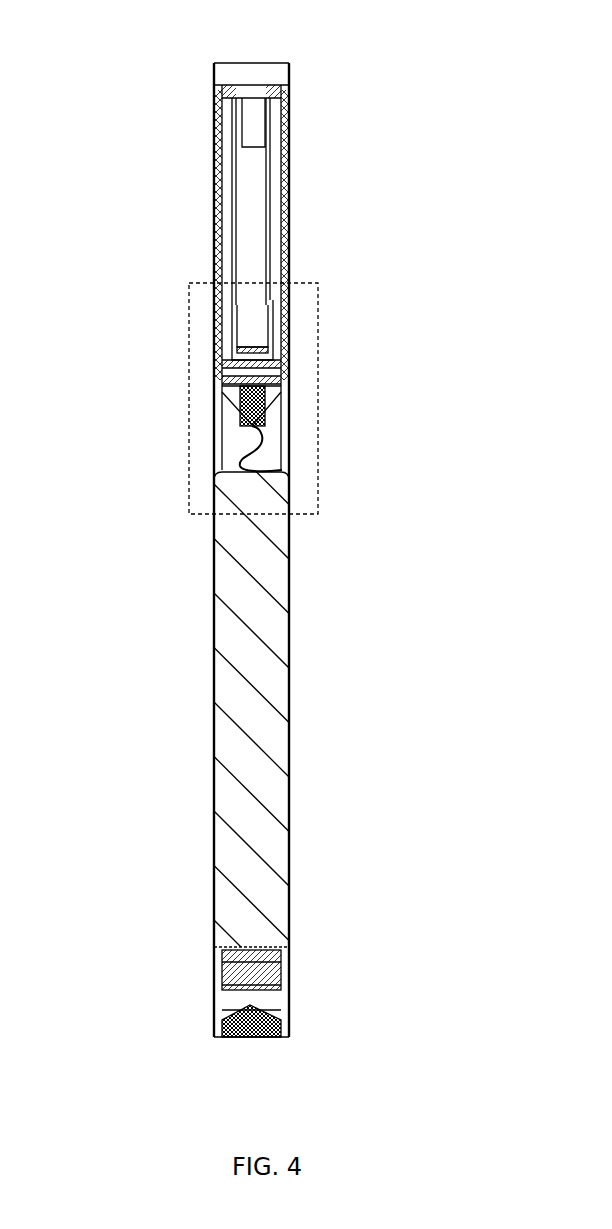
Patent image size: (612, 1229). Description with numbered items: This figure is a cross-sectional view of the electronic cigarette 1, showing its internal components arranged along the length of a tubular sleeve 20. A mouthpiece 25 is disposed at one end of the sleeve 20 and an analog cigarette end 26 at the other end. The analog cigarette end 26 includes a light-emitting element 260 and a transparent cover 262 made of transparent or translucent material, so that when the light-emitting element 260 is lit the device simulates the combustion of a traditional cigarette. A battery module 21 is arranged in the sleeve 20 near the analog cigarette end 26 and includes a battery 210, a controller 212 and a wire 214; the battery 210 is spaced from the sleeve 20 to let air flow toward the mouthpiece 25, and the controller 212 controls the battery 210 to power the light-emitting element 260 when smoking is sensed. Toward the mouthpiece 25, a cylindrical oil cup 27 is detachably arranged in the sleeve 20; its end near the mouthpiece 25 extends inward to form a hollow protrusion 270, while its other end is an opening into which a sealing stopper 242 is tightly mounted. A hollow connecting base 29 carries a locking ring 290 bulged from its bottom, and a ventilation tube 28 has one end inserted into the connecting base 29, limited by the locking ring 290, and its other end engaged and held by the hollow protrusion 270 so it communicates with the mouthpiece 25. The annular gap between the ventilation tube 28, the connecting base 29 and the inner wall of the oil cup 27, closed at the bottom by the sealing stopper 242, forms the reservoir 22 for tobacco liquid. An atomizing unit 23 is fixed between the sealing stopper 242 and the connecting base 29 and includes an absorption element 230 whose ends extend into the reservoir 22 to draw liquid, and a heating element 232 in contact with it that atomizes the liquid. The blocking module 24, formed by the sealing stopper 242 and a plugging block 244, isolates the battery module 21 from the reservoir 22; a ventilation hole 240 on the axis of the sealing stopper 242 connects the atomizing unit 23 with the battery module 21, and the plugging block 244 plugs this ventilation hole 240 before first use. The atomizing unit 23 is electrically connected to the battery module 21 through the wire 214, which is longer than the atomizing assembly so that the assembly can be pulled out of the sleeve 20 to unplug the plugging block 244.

The electronic cigarette 1 is at (307, 283).
The sleeve 20 is at (189, 450).
The battery module 21 is at (369, 708).
The reservoir 22 is at (225, 215).
The atomizing unit 23 is at (352, 351).
The blocking module 24 is at (154, 368).
The mouthpiece 25 is at (252, 63).
The analog cigarette end 26 is at (156, 998).
The oil cup 27 is at (214, 125).
The ventilation tube 28 is at (289, 180).
The connecting base 29 is at (214, 300).
The battery 210 is at (272, 688).
The controller 212 is at (320, 935).
The wire 214 is at (262, 448).
The absorption element 230 is at (290, 370).
The heating element 232 is at (292, 347).
The ventilation hole 240 is at (214, 360).
The sealing stopper 242 is at (214, 376).
The plugging block 244 is at (214, 405).
The light-emitting element 260 is at (214, 962).
The transparent cover 262 is at (214, 1022).
The hollow protrusion 270 is at (283, 103).
The locking ring 290 is at (270, 318).